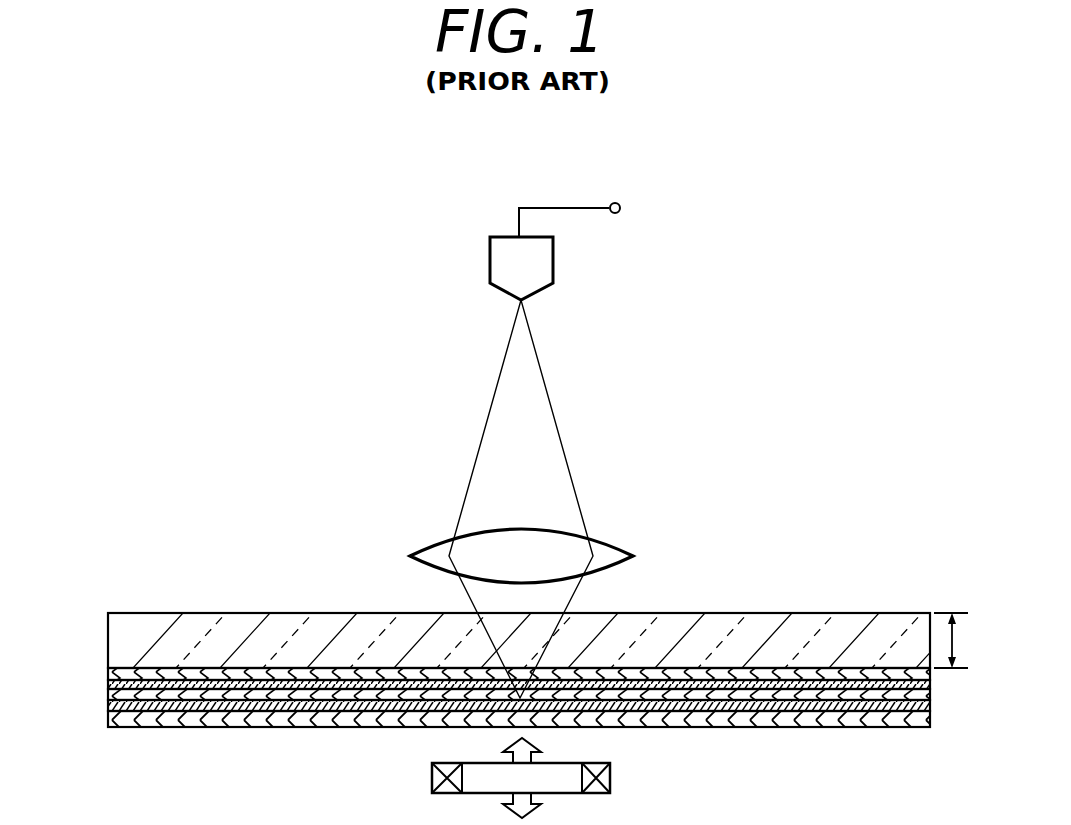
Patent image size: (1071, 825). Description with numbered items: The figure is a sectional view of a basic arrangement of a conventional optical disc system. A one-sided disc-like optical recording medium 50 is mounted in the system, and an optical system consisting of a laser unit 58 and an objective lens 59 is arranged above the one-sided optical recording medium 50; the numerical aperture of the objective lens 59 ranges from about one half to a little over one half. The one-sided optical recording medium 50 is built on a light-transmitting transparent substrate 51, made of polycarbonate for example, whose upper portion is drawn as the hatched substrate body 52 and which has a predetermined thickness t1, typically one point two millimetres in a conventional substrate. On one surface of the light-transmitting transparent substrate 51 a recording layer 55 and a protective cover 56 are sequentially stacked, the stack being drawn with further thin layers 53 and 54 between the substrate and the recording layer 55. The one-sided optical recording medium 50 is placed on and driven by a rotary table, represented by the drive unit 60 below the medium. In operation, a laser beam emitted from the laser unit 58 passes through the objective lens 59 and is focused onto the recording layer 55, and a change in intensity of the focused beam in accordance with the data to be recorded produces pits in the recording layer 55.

The one-sided optical recording medium 50 is at (198, 580).
The light-transmitting transparent substrate 51 is at (835, 625).
The substrate layer 52 is at (105, 652).
The first dielectric layer 53 is at (110, 671).
The recording layer 54 is at (108, 695).
The recording layer 55 is at (108, 708).
The protective cover 56 is at (108, 724).
The laser unit 58 is at (540, 260).
The objective lens 59 is at (605, 552).
The actuator 60 is at (612, 778).
The predetermined thickness t1 is at (955, 638).